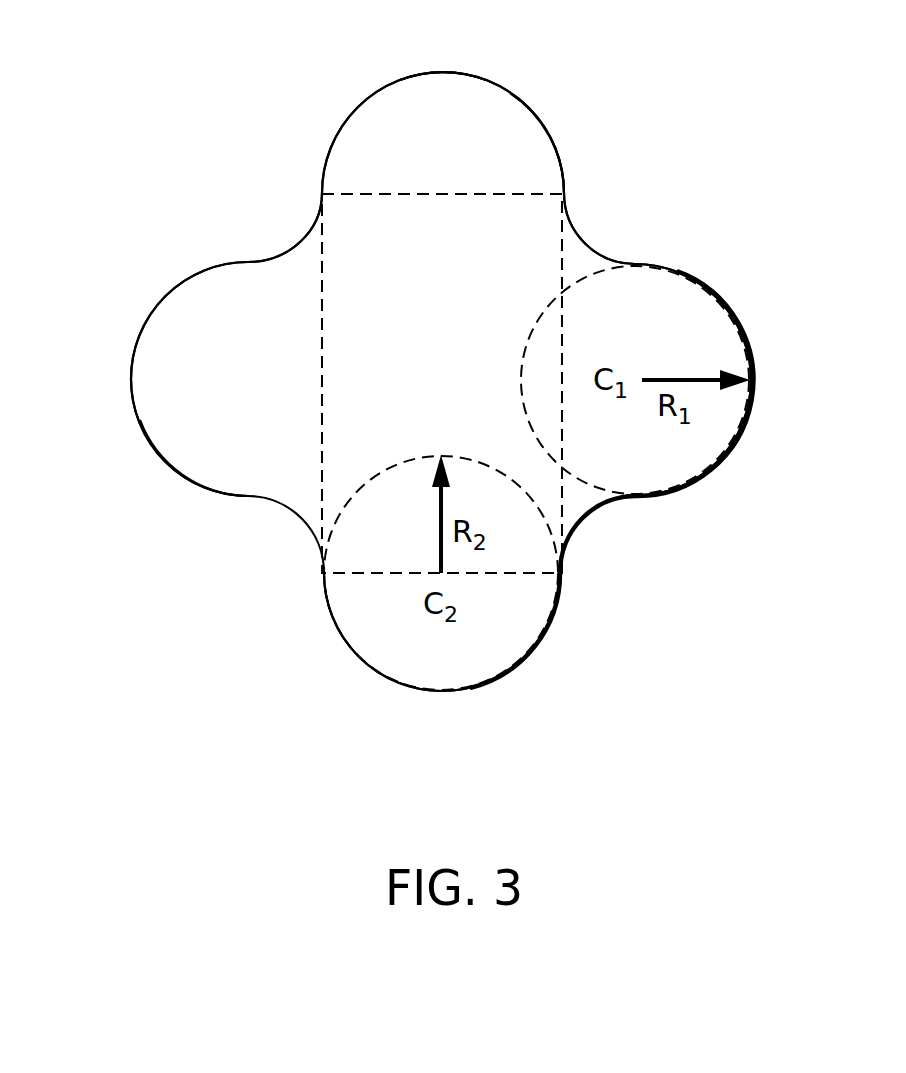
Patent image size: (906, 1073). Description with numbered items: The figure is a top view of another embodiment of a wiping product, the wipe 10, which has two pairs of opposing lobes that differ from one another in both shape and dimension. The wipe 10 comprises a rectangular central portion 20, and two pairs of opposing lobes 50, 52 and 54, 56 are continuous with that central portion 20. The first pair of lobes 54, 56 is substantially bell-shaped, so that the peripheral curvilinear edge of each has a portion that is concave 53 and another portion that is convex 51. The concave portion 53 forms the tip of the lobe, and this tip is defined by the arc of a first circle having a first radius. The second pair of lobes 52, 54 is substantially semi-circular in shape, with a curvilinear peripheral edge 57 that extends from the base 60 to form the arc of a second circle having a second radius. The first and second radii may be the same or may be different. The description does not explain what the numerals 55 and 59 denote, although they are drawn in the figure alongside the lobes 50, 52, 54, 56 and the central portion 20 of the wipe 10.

The wipe 10 is at (319, 638).
The rectangular central portion 20 is at (542, 240).
The lobe 50 is at (472, 98).
The convex portion 51 is at (257, 243).
The lobe 52 is at (470, 650).
The concave portion 53 is at (127, 372).
The lobe 54 is at (668, 307).
The reference rectangle 55 is at (323, 330).
The lobe 56 is at (177, 440).
The curvilinear peripheral edge 57 is at (543, 113).
The lobe apex 59 is at (410, 70).
The base 60 is at (493, 197).